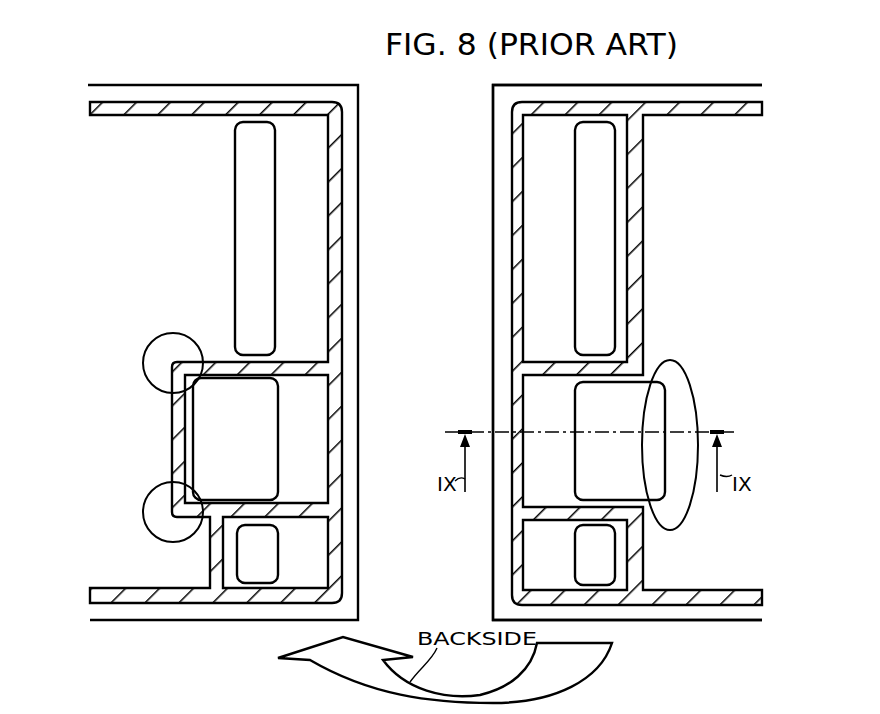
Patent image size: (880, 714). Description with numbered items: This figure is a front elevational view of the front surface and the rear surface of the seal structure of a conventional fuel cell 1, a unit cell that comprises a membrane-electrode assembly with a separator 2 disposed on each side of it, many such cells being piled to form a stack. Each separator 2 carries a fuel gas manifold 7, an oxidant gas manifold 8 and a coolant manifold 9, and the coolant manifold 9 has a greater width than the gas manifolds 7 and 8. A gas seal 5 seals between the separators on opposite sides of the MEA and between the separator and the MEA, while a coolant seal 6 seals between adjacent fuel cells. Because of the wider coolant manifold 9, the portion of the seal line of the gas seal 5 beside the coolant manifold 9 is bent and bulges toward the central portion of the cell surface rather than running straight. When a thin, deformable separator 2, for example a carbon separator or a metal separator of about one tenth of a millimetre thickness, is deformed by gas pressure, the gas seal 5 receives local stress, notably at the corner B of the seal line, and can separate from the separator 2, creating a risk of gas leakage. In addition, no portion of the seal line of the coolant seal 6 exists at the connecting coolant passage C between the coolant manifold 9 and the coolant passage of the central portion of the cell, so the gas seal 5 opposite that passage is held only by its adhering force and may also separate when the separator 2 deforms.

The fuel cell 1 is at (702, 84).
The separator 2 is at (107, 92).
The gas seal 5 is at (335, 138).
The coolant seal 6 is at (643, 186).
The fuel gas manifold 7 is at (278, 558).
The oxidant gas manifold 8 is at (277, 272).
The coolant manifold 9 is at (278, 408).
The corner of the seal line B is at (152, 482).
The connecting coolant passage C is at (653, 360).